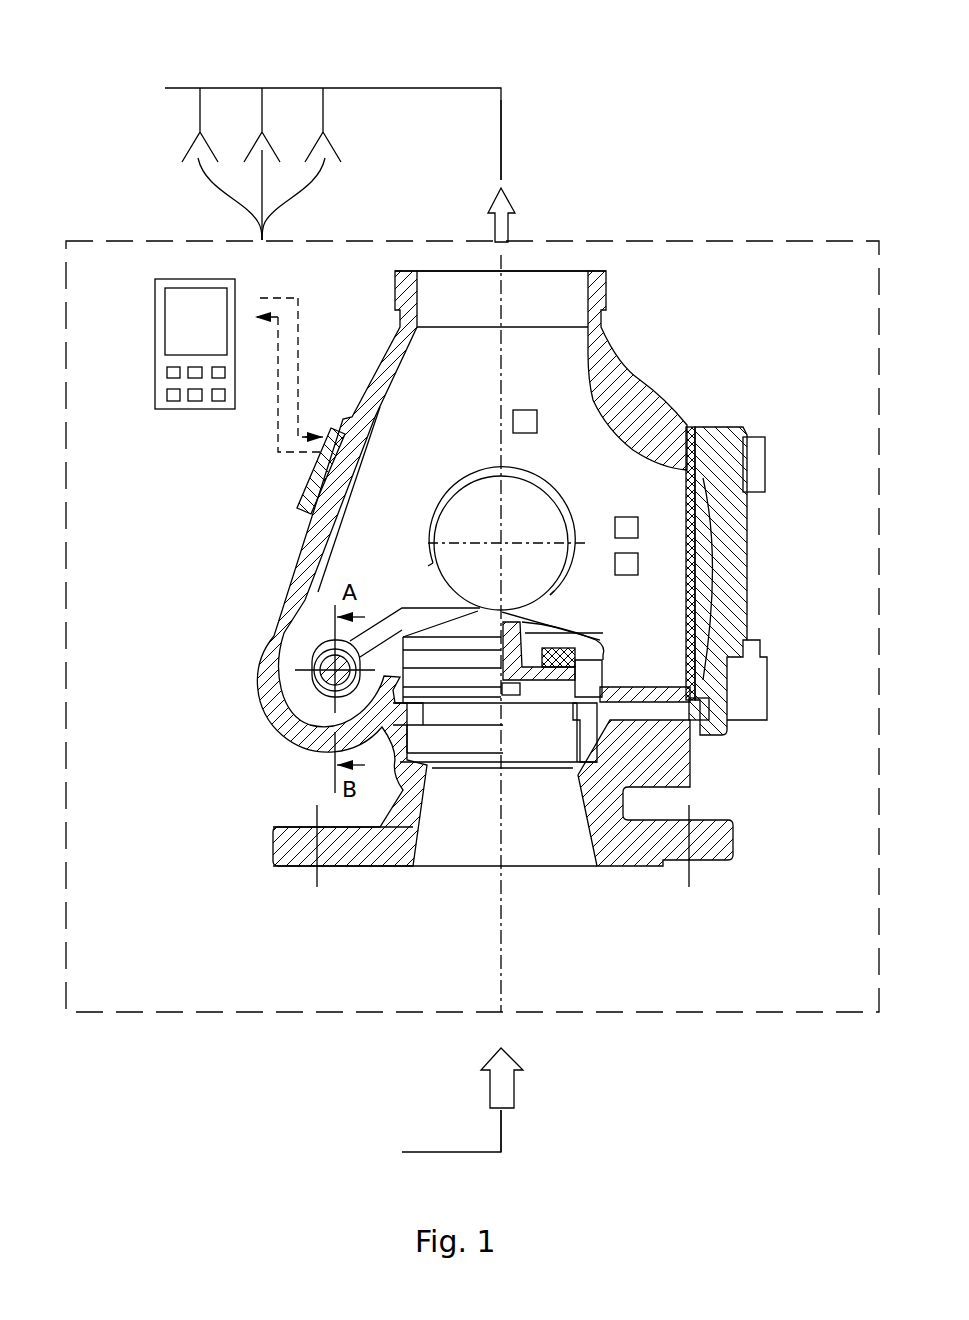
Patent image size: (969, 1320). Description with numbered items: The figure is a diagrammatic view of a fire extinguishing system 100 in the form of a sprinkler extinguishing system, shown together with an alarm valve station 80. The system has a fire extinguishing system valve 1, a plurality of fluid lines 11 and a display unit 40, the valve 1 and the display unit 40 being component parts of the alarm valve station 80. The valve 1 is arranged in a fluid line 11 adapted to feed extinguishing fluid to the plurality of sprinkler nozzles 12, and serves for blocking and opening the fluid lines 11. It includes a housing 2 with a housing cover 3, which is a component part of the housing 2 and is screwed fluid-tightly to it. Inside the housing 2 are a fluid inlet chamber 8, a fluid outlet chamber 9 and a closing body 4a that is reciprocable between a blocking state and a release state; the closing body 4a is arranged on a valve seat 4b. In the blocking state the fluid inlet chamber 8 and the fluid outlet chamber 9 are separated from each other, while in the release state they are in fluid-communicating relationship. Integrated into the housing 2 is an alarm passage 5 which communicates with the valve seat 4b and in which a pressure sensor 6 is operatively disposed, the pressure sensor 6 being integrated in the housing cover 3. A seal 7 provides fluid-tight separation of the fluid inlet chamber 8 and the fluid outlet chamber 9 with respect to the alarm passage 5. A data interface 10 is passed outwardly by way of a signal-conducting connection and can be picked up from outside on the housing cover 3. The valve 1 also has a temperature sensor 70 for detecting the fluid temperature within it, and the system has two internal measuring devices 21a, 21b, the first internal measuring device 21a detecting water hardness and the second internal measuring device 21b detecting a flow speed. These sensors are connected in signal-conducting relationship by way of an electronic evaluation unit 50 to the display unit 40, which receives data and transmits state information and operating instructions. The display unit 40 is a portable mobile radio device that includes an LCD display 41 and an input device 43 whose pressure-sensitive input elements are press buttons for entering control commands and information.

The fire extinguishing system 100 is at (746, 125).
The alarm valve station 80 is at (767, 239).
The fire extinguishing system valve 1 is at (593, 257).
The housing 2 is at (602, 372).
The housing cover 3 is at (722, 435).
The closing body 4a is at (546, 627).
The valve seat 4b is at (558, 693).
The alarm passage 5 is at (692, 710).
The pressure sensor 6 is at (650, 712).
The seal 7 is at (698, 712).
The fluid inlet chamber 8 is at (449, 815).
The fluid outlet chamber 9 is at (443, 425).
The data interface 10 is at (750, 640).
The fluid lines 11 is at (501, 113).
The sprinkler nozzles 12 is at (261, 180).
The first internal measuring device 21a is at (641, 565).
The second internal measuring device 21b is at (522, 408).
The display unit 40 is at (213, 320).
The LCD display 41 is at (182, 323).
The input device 43 is at (172, 397).
The electronic evaluation unit 50 is at (311, 479).
The temperature sensor 70 is at (623, 513).